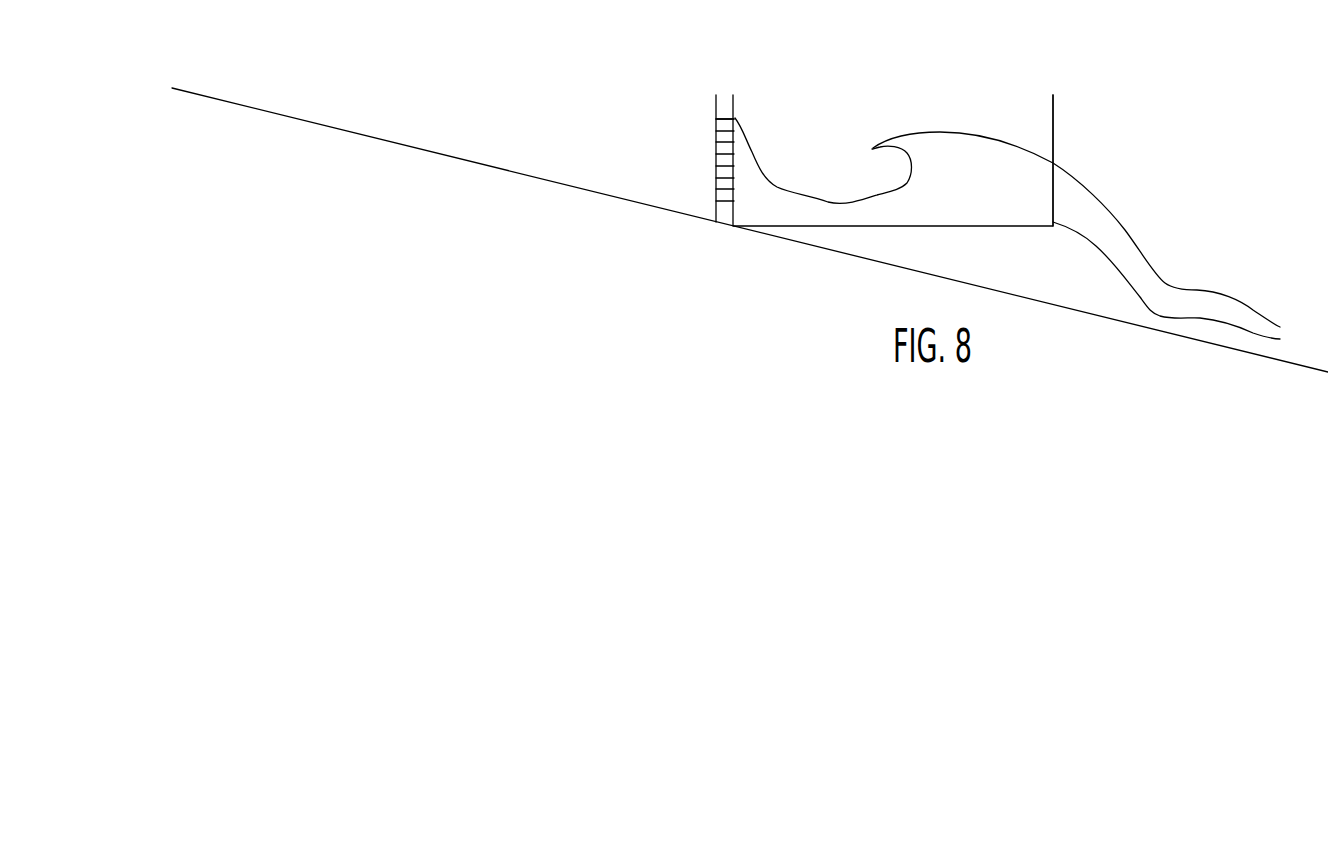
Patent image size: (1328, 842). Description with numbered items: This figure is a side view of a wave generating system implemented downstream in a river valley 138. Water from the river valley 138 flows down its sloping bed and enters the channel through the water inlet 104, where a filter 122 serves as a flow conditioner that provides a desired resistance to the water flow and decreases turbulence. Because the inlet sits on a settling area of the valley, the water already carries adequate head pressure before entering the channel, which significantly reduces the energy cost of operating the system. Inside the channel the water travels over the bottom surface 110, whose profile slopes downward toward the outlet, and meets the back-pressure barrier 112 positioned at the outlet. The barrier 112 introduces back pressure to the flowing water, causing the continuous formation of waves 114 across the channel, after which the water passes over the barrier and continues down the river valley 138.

The river valley 138 is at (518, 175).
The bottom surface 110 is at (900, 227).
The water inlet 104 is at (726, 187).
The filter 122 is at (723, 119).
The wave 114 is at (925, 133).
The back-pressure barrier 112 is at (1055, 140).